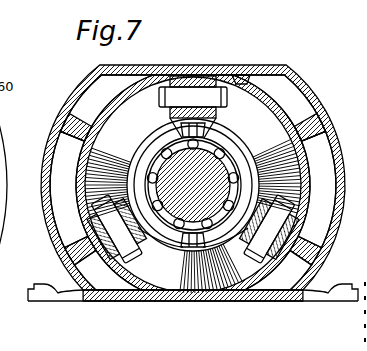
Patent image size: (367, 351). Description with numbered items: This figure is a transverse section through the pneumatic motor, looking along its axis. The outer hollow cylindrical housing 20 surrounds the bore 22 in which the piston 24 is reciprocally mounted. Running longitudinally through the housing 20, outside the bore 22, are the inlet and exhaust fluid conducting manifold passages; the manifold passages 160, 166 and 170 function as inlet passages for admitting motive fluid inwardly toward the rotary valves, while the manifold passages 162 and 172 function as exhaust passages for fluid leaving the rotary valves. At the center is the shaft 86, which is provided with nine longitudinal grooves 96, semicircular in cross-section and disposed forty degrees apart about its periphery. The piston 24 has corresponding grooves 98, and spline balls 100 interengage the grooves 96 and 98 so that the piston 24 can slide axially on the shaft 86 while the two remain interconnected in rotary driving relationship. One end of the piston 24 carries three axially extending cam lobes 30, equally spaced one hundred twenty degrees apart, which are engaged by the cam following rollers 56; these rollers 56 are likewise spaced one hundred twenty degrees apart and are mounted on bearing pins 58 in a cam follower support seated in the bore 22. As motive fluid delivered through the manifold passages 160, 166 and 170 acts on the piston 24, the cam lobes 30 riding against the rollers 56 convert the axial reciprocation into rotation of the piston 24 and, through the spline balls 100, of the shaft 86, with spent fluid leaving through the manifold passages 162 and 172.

The housing 20 is at (161, 64).
The bore 22 is at (236, 81).
The piston 24 is at (266, 111).
The cam lobes 30 is at (283, 136).
The cam following rollers 56 is at (227, 106).
The bearing pins 58 is at (167, 70).
The shaft 86 is at (206, 180).
The longitudinal grooves 96 is at (162, 206).
The grooves 98 is at (220, 147).
The spline balls 100 is at (165, 135).
The manifold passage 160 is at (292, 80).
The manifold passage 162 is at (339, 178).
The manifold passage 166 is at (301, 290).
The manifold passage 170 is at (76, 201).
The manifold passage 172 is at (80, 88).